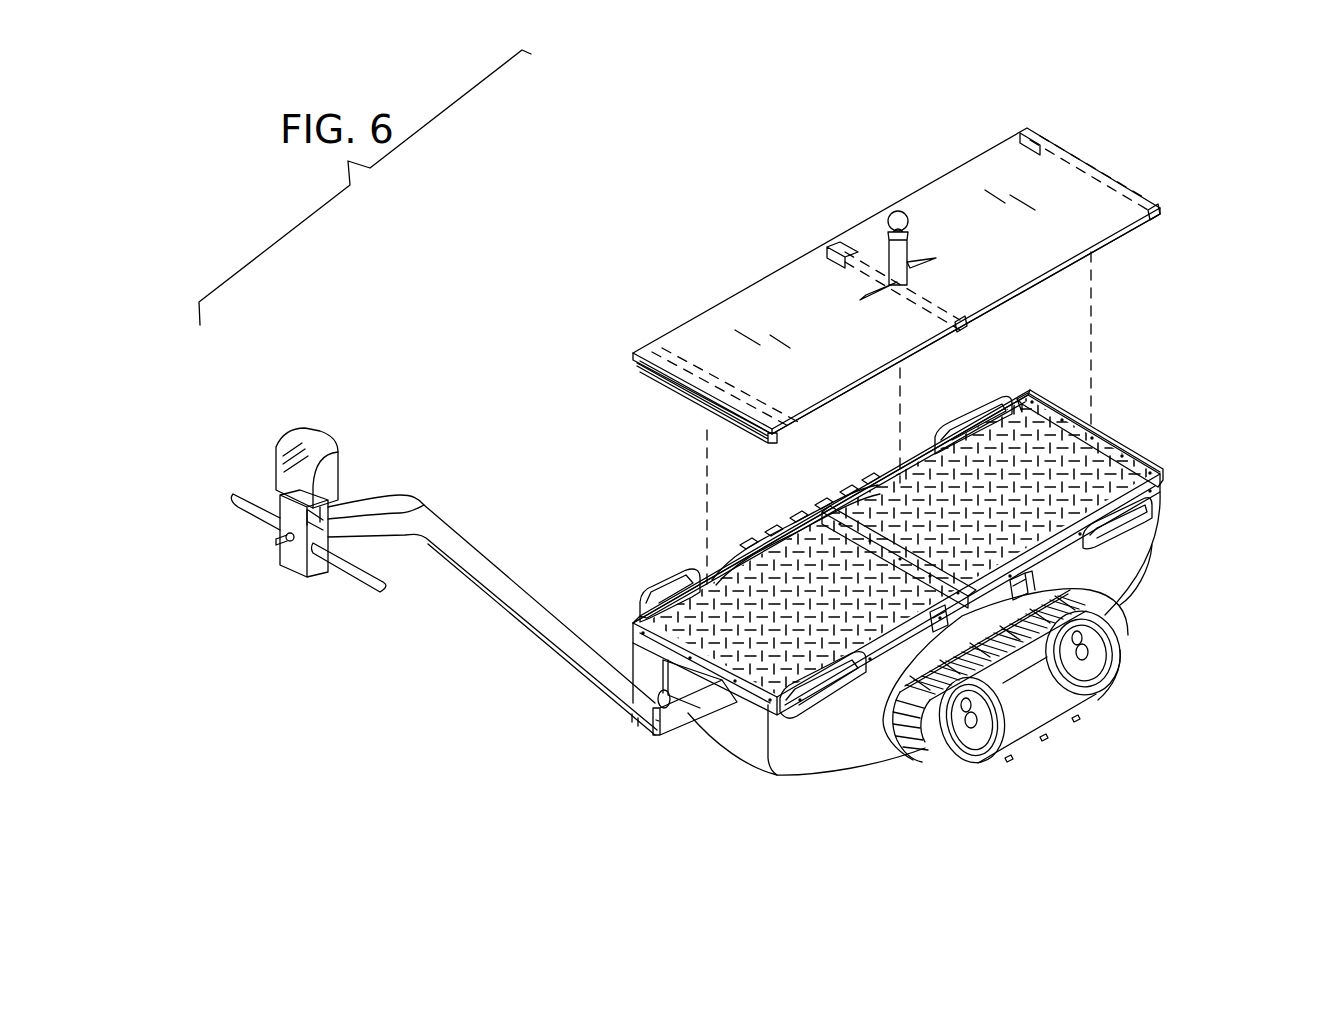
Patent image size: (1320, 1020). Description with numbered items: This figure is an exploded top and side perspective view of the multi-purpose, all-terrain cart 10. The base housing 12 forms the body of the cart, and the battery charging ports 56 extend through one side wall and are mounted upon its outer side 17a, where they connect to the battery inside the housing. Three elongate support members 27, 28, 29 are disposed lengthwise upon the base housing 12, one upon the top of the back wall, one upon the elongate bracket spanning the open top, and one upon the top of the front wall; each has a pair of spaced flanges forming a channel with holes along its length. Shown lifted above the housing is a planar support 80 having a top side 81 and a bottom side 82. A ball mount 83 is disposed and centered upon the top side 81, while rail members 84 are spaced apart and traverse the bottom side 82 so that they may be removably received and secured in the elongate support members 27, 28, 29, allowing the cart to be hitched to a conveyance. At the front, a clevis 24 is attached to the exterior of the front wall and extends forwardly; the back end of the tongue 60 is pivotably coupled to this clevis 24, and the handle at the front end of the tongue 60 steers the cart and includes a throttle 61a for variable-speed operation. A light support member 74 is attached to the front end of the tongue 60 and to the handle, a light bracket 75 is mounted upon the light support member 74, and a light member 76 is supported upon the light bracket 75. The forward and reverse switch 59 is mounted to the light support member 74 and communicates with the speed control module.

The cart 10 is at (740, 175).
The base housing 12 is at (797, 765).
The outer side of the side wall 17a is at (1138, 565).
The clevis 24 is at (690, 718).
The elongate support member 27 is at (668, 605).
The elongate support member 28 is at (862, 505).
The elongate support member 29 is at (1100, 445).
The battery charging ports 56 is at (908, 745).
The forward and reverse switch 59 is at (278, 538).
The tongue 60 is at (500, 548).
The throttle 61a is at (342, 590).
The light support member 74 is at (297, 585).
The light bracket 75 is at (350, 495).
The light member 76 is at (325, 470).
The planar support 80 is at (690, 335).
The top side 81 is at (1065, 262).
The bottom side 82 is at (912, 352).
The ball mount 83 is at (850, 238).
The rail members 84 is at (1165, 217).